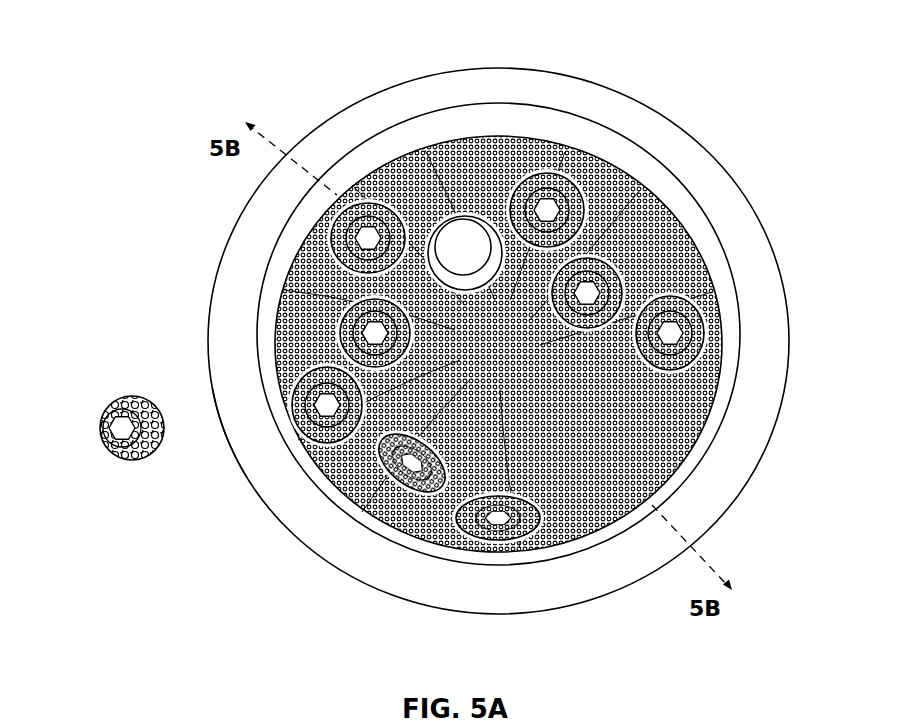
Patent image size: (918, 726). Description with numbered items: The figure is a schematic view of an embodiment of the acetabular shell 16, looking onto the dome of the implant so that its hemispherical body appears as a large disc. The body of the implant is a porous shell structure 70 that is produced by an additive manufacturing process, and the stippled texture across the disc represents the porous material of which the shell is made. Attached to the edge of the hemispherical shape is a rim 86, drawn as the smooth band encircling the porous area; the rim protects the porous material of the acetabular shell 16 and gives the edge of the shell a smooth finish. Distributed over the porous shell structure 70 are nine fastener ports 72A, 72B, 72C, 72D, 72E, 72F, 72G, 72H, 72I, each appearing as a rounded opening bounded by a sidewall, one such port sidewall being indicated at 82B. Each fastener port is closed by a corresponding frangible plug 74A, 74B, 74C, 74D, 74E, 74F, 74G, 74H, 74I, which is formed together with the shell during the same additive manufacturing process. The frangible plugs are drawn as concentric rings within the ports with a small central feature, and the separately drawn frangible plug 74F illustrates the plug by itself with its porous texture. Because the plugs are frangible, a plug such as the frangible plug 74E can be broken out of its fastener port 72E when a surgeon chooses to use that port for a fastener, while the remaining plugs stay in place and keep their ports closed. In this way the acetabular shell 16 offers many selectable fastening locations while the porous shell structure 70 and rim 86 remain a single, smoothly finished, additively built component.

The acetabular shell 16 is at (141, 151).
The porous shell structure 70 is at (629, 600).
The rim 86 is at (763, 432).
The sidewall 82B is at (280, 505).
The fastener port 72A is at (526, 548).
The fastener port 72B is at (360, 513).
The fastener port 72C is at (296, 441).
The fastener port 72D is at (282, 290).
The fastener port 72E is at (355, 180).
The fastener port 72F is at (425, 150).
The fastener port 72G is at (565, 152).
The fastener port 72H is at (640, 190).
The fastener port 72I is at (712, 292).
The frangible plug 74A is at (497, 540).
The frangible plug 74B is at (404, 492).
The frangible plug 74C is at (293, 398).
The frangible plug 74D is at (340, 332).
The frangible plug 74E is at (310, 233).
The frangible plug 74F is at (104, 447).
The frangible plug 74G is at (520, 192).
The frangible plug 74H is at (620, 288).
The frangible plug 74I is at (712, 328).